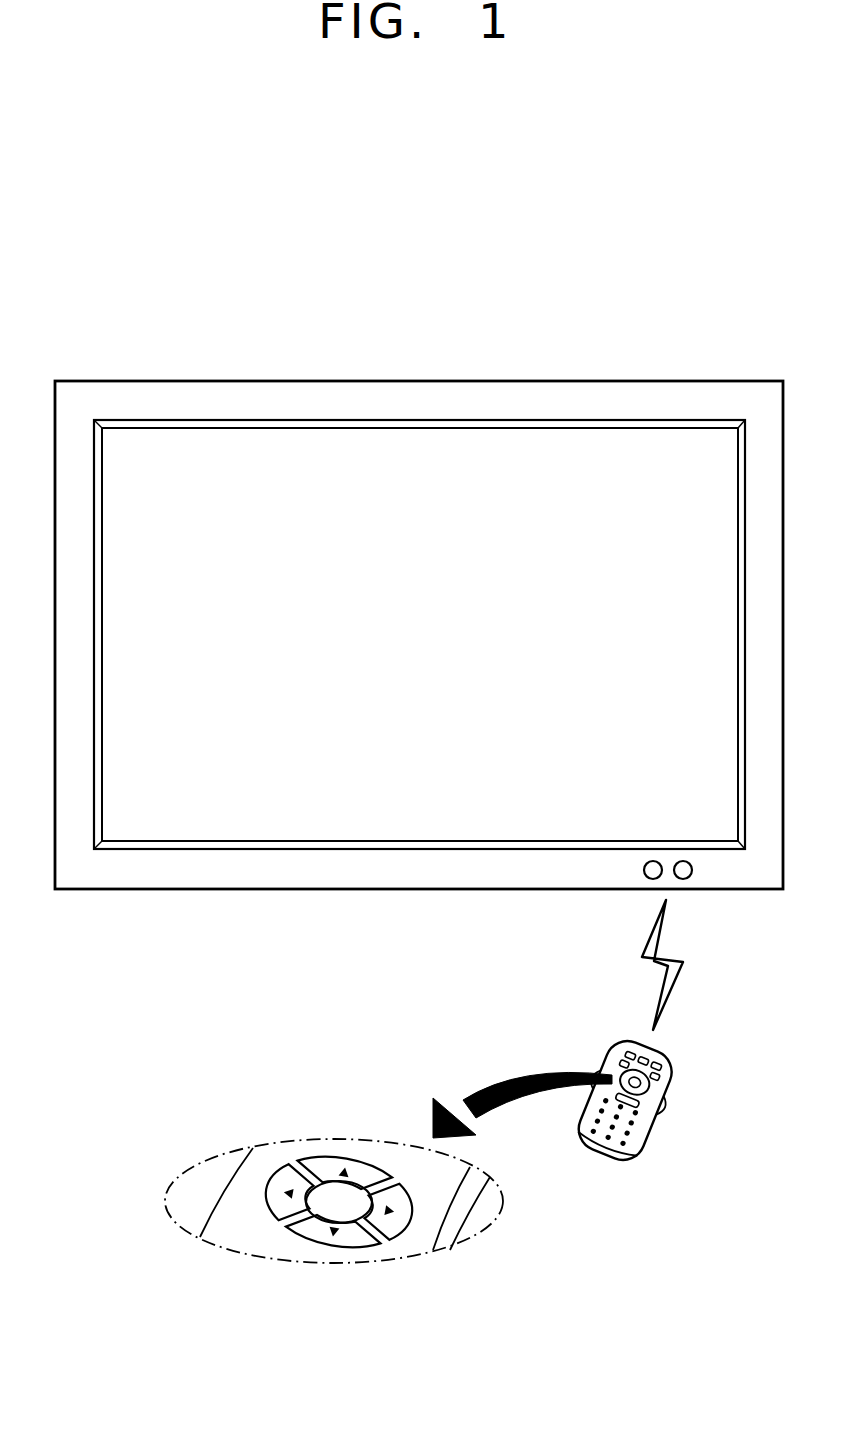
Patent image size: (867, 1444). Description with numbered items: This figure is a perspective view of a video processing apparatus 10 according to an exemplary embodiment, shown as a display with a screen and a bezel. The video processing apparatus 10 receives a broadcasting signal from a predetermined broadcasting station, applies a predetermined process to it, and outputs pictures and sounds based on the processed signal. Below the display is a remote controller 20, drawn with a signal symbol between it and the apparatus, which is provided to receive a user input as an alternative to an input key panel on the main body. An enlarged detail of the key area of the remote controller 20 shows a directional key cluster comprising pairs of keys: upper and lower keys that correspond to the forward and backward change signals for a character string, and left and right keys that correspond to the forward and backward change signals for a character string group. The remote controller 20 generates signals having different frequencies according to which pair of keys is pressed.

The video processing apparatus 10 is at (216, 381).
The remote controller 20 is at (648, 1157).